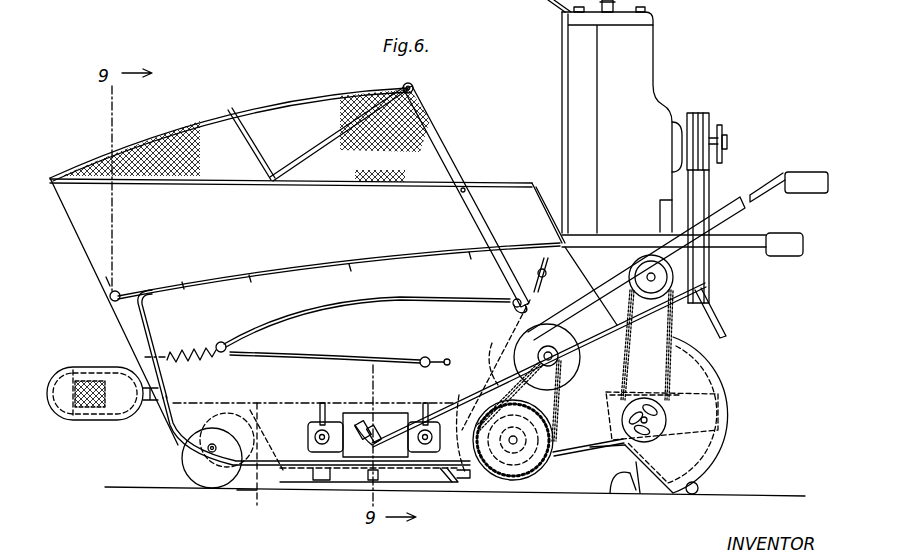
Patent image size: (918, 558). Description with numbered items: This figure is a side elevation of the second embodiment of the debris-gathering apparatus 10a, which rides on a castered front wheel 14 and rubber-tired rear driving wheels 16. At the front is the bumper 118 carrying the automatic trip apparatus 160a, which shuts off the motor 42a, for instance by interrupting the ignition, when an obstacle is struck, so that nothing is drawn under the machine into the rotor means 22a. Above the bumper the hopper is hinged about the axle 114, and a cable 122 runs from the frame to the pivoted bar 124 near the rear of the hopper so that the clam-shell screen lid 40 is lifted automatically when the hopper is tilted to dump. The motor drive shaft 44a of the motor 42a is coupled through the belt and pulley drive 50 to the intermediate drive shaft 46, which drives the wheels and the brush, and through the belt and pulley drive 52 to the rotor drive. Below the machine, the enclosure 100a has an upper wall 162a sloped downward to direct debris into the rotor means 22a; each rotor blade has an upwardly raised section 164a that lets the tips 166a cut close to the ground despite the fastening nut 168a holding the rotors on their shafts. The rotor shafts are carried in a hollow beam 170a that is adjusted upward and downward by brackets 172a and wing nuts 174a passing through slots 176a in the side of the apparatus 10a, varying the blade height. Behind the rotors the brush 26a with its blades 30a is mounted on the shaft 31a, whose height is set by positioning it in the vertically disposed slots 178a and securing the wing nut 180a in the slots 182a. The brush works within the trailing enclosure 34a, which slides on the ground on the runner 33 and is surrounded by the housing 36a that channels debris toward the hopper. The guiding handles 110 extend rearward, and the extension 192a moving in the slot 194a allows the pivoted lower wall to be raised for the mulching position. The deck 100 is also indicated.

The debris-gathering apparatus 10a is at (126, 331).
The front wheel 14 is at (184, 462).
The rear wheel 16 is at (520, 489).
The rotor means 22a is at (328, 483).
The brush 26a is at (639, 488).
The blade 30a is at (618, 472).
The shaft 31a is at (645, 403).
The runner 33 is at (699, 490).
The trailing enclosure 34a is at (712, 467).
The housing 36a is at (693, 351).
The screen lid 40 is at (229, 112).
The motor 42a is at (642, 74).
The motor drive shaft 44a is at (730, 143).
The intermediate drive shaft 46 is at (581, 355).
The belt and pulley drive 50 is at (694, 183).
The belt and pulley drive 52 is at (718, 296).
The deck 100 is at (472, 479).
The enclosure 100a is at (316, 464).
The guiding handles 110 is at (805, 193).
The axle 114 is at (109, 294).
The bumper 118 is at (86, 424).
The cable 122 is at (348, 353).
The pivoted bar 124 is at (447, 158).
The automatic trip apparatus 160a is at (143, 372).
The upper wall 162a is at (236, 488).
The raised section 164a is at (426, 483).
The tips 166a is at (452, 484).
The fastening nut 168a is at (372, 483).
The hollow beam 170a is at (340, 414).
The brackets 172a is at (315, 441).
The wing nuts 174a is at (316, 432).
The slots 176a is at (322, 404).
The slots 178a is at (656, 433).
The wing nut 180a is at (668, 384).
The slots 182a is at (664, 416).
The extension 192a is at (546, 262).
The slot 194a is at (552, 292).